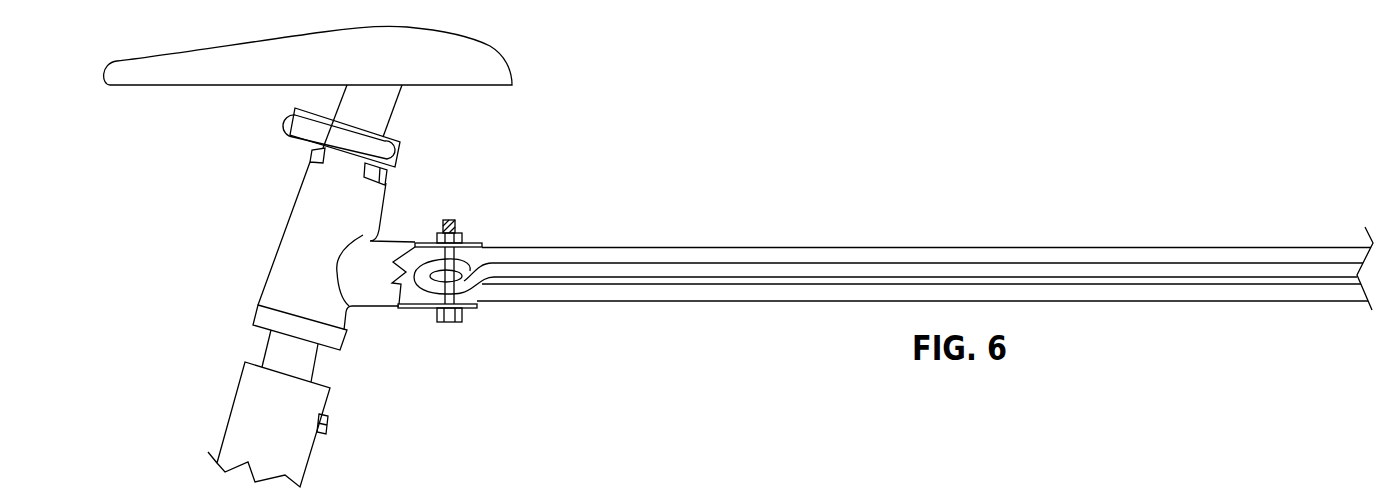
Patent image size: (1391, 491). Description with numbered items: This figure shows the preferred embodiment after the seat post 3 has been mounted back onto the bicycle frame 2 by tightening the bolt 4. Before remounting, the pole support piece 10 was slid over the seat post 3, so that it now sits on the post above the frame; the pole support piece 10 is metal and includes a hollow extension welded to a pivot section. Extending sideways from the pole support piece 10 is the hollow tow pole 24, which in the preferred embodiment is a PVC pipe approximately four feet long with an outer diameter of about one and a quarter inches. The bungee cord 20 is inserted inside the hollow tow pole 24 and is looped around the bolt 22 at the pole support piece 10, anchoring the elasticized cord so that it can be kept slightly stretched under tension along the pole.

The bicycle frame 2 is at (308, 462).
The seat post 3 is at (397, 115).
The bolt 4 is at (328, 424).
The pole support piece 10 is at (382, 203).
The bungee cord 20 is at (807, 285).
The bolt 22 is at (450, 322).
The hollow tow pole 24 is at (813, 248).